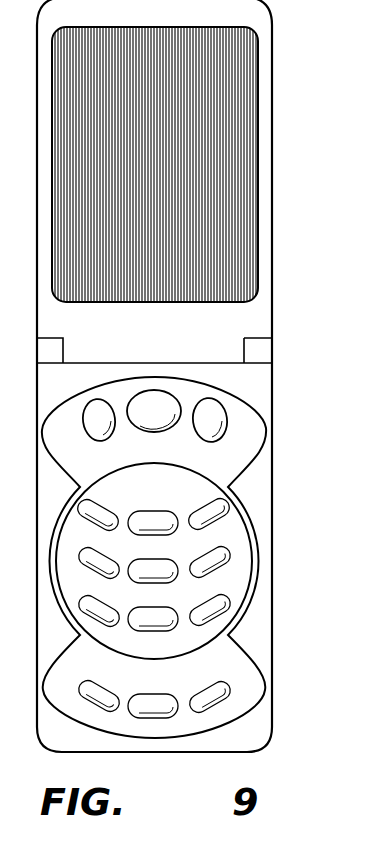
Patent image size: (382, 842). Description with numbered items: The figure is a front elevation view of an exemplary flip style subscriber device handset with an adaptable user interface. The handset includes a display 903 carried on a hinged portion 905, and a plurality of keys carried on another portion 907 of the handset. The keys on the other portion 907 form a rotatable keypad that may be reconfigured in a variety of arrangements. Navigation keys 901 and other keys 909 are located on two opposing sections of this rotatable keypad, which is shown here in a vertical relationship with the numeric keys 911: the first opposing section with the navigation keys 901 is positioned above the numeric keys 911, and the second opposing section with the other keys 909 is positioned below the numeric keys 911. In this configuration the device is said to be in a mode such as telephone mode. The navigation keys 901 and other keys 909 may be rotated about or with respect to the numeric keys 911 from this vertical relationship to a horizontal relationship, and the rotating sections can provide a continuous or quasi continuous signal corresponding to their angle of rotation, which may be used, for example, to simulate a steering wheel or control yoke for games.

The navigation keys 901 is at (237, 436).
The display 903 is at (177, 171).
The hinged portion 905 is at (273, 181).
The another portion 907 is at (273, 531).
The other keys 909 is at (246, 695).
The numeric keys 911 is at (237, 590).